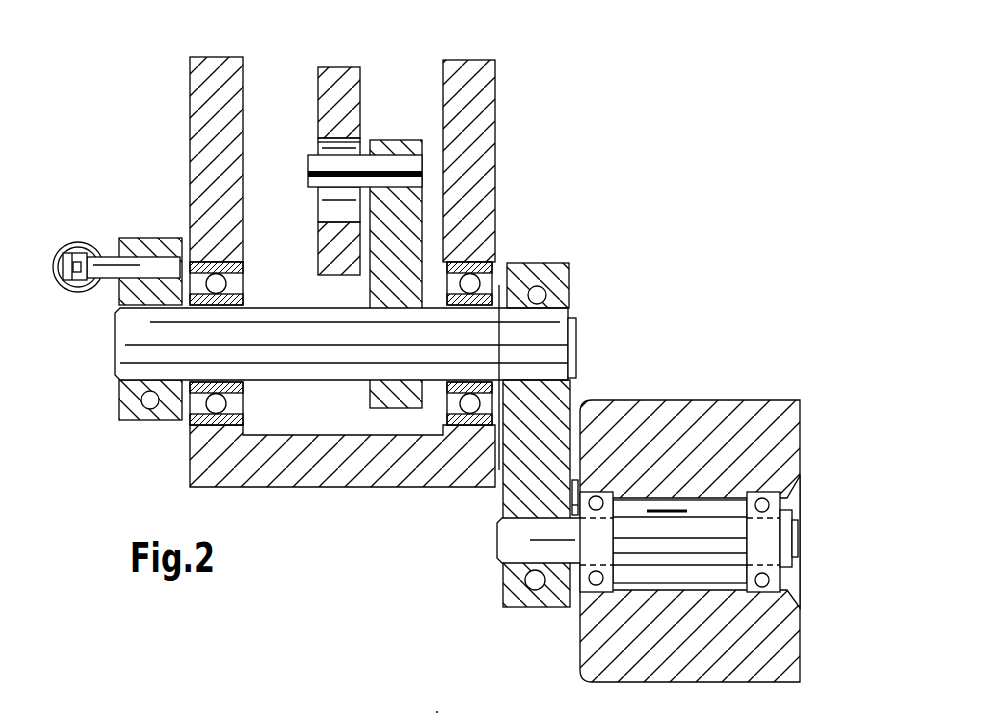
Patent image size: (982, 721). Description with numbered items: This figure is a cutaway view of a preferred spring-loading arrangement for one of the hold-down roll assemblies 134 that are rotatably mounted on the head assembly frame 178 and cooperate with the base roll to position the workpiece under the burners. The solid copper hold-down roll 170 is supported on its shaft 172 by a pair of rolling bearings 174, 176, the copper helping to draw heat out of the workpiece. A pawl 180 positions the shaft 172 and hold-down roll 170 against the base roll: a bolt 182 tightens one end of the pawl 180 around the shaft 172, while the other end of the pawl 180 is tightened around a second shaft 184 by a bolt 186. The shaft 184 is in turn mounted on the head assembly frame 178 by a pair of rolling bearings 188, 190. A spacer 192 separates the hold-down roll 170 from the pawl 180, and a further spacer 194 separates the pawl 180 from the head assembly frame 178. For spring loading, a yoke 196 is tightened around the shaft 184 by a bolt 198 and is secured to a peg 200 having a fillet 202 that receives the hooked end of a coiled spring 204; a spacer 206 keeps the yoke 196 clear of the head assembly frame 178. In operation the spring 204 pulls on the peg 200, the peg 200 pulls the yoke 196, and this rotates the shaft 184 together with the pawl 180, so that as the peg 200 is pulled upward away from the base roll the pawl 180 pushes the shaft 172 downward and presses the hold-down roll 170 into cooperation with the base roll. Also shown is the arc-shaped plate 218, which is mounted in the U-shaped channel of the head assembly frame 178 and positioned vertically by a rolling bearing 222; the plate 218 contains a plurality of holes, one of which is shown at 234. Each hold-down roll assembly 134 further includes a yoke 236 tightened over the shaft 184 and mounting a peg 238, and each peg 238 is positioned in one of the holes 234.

The hold-down roll assembly 134 is at (370, 52).
The hold-down roll 170 is at (715, 415).
The shaft 172 is at (670, 543).
The rolling bearing 174 is at (768, 540).
The rolling bearing 176 is at (587, 580).
The head assembly frame 178 is at (490, 165).
The pawl 180 is at (487, 498).
The bolt 182 is at (530, 580).
The shaft 184 is at (560, 330).
The bolt 186 is at (540, 292).
The rolling bearing 188 is at (452, 430).
The rolling bearing 190 is at (228, 425).
The spacer 192 is at (577, 495).
The spacer 194 is at (498, 290).
The yoke 196 is at (113, 442).
The bolt 198 is at (152, 403).
The peg 200 is at (114, 268).
The fillet 202 is at (83, 283).
The coiled spring 204 is at (72, 290).
The spacer 206 is at (183, 250).
The arc-shaped plate 218 is at (340, 253).
The rolling bearing 222 is at (460, 709).
The hole 234 is at (343, 223).
The yoke 236 is at (383, 290).
The peg 238 is at (395, 165).